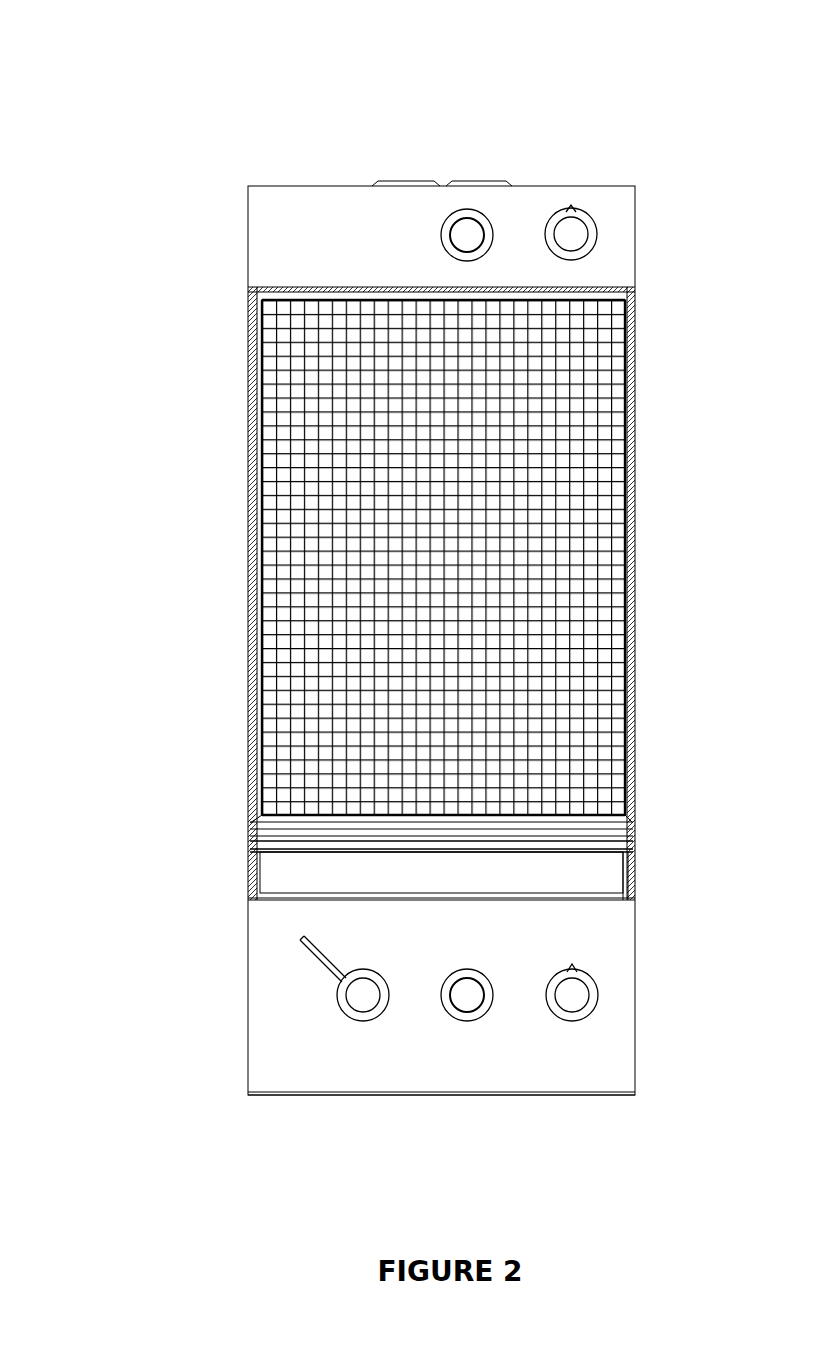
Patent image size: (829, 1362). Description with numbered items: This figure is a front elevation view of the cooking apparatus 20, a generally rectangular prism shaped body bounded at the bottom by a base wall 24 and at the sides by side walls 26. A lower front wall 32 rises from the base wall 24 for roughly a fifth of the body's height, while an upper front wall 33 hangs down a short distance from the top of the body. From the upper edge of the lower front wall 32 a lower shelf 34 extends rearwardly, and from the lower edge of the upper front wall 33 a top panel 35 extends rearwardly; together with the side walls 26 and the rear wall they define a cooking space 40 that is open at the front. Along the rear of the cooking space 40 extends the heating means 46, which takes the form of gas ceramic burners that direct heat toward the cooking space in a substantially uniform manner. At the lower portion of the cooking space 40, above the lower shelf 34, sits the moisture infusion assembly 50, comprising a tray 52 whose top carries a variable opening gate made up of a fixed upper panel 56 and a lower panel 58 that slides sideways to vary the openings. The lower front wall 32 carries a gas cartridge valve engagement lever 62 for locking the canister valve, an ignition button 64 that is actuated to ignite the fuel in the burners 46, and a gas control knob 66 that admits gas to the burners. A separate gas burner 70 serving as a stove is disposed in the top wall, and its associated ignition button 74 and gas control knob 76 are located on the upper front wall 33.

The cooking apparatus 20 is at (648, 140).
The base wall 24 is at (300, 1098).
The side walls 26 is at (245, 502).
The lower front wall 32 is at (265, 951).
The upper front wall 33 is at (258, 245).
The lower shelf 34 is at (613, 903).
The top panel 35 is at (265, 289).
The cooking space 40 is at (305, 628).
The heating means 46 is at (598, 665).
The moisture infusion assembly 50 is at (236, 872).
The tray 52 is at (622, 876).
The upper panel 56 is at (617, 833).
The lower panel 58 is at (622, 842).
The gas cartridge valve engagement lever 62 is at (367, 1002).
The ignition button 64 is at (470, 1005).
The gas control knob 66 is at (575, 1012).
The gas burner 70 is at (472, 178).
The ignition button 74 is at (491, 226).
The gas control knob 76 is at (598, 237).